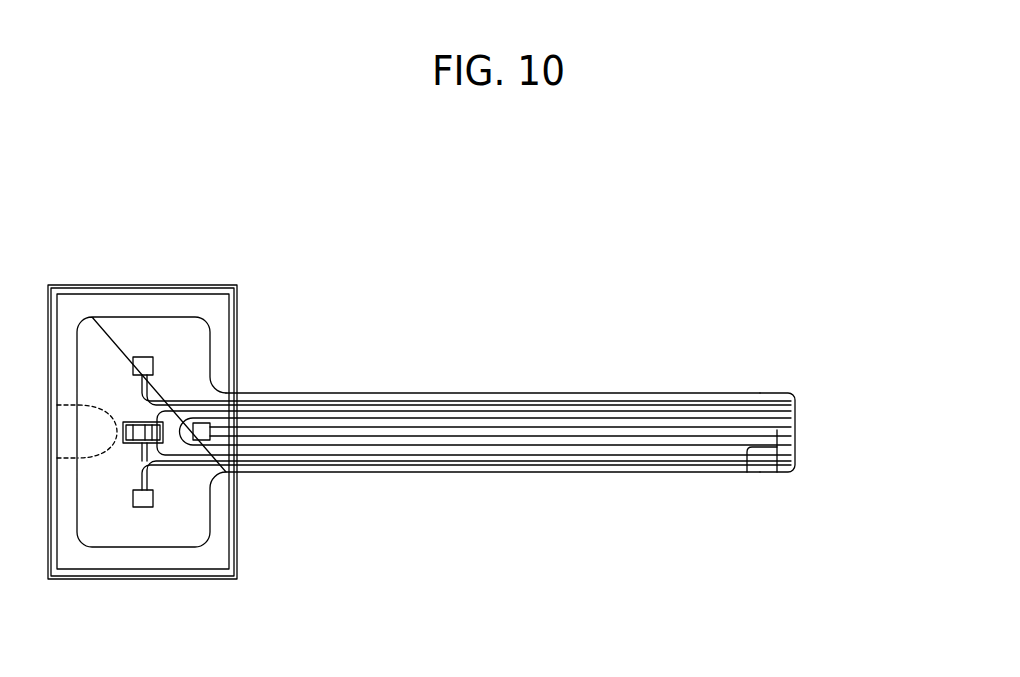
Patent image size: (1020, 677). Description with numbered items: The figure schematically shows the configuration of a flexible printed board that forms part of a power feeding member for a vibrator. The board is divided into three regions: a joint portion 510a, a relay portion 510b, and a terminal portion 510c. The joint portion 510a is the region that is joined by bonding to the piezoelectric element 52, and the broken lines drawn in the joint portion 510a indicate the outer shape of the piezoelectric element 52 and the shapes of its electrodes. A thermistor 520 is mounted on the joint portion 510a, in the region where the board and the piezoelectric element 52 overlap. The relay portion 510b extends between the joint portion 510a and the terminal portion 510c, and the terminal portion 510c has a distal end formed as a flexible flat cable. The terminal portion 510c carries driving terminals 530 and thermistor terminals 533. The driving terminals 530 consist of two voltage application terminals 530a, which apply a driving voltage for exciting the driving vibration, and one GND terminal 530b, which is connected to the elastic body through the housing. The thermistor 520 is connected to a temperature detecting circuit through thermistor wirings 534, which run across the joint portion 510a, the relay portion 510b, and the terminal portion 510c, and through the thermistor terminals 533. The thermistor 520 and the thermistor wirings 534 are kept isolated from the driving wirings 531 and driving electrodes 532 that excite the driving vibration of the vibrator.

The piezoelectric element 52 is at (66, 576).
The joint portion 510a is at (190, 350).
The relay portion 510b is at (482, 393).
The terminal portion 510c is at (760, 393).
The thermistor 520 is at (147, 443).
The driving terminals 530 is at (547, 428).
The voltage application terminals 530a is at (795, 397).
The GND terminal 530b is at (795, 427).
The driving wirings 531 is at (393, 420).
The driving electrodes 532 is at (142, 357).
The thermistor terminals 533 is at (777, 430).
The thermistor wirings 534 is at (530, 420).